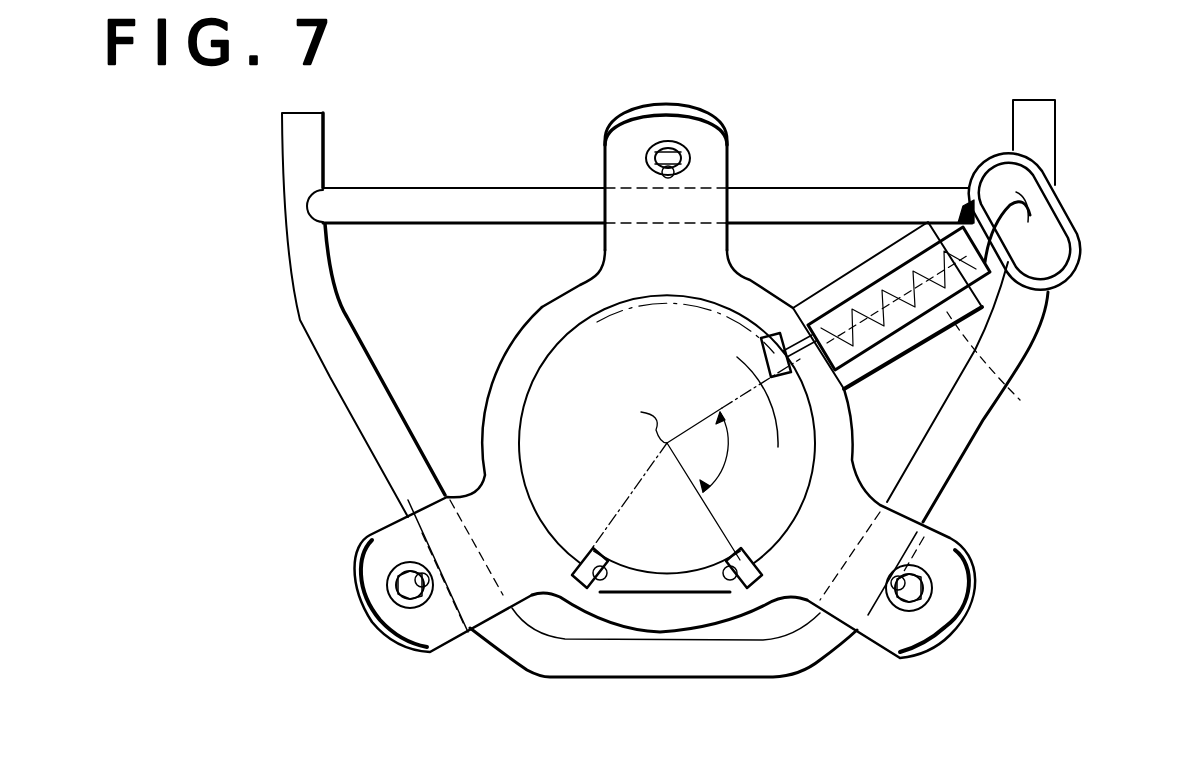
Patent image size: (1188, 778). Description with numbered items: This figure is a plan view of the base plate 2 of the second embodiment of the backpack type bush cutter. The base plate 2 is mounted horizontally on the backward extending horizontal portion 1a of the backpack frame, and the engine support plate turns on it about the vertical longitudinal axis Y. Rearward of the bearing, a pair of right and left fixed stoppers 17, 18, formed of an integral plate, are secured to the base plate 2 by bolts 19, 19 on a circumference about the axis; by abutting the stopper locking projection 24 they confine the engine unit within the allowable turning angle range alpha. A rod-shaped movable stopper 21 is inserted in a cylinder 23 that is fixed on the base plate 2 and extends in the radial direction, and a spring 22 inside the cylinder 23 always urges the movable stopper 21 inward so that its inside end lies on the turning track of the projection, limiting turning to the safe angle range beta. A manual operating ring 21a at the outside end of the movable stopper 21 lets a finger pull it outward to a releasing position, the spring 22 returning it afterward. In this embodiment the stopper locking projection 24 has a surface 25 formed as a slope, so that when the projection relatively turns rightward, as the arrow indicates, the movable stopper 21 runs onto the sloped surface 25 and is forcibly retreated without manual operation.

The backward extending horizontal portion 1a is at (299, 316).
The base plate 2 is at (512, 378).
The stopper 17 is at (580, 565).
The stopper 18 is at (790, 582).
The bolt 19 is at (597, 587).
The movable stopper 21 is at (860, 430).
The manual operating ring 21a is at (1075, 240).
The spring 22 is at (1020, 400).
The cylinder 23 is at (912, 262).
The stopper locking projection 24 is at (773, 331).
The surface 25 is at (790, 352).